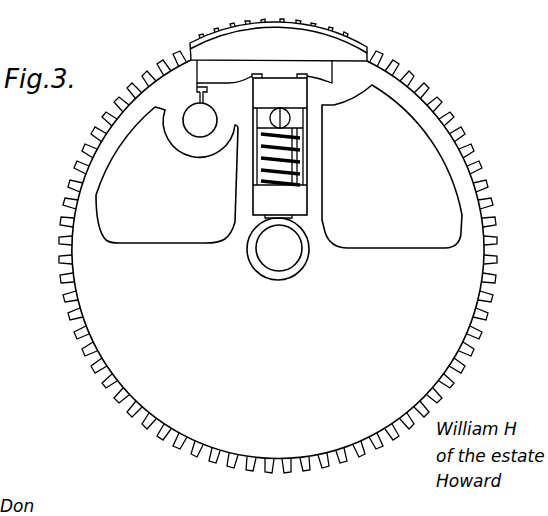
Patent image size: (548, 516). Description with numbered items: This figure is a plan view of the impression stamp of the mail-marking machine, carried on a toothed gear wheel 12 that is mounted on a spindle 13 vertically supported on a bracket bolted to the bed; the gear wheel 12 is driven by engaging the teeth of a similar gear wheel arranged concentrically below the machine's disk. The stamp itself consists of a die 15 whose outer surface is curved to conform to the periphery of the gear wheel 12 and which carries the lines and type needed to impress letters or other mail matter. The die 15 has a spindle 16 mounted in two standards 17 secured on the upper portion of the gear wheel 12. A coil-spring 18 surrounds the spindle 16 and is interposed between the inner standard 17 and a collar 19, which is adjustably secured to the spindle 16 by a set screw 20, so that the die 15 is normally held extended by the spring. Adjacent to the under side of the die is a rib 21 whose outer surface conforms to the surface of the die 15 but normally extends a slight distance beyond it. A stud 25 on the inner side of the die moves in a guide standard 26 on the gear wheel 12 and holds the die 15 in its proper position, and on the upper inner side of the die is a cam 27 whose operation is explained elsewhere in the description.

The gear wheel 12 is at (278, 262).
The spindle 13 is at (278, 249).
The die 15 is at (278, 41).
The spindle 16 is at (287, 160).
The standards 17 is at (279, 146).
The coil-spring 18 is at (296, 168).
The collar 19 is at (300, 118).
The set screw 20 is at (270, 118).
The rib 21 is at (340, 35).
The stud 25 is at (196, 96).
The guide standard 26 is at (200, 120).
The cam 27 is at (264, 71).